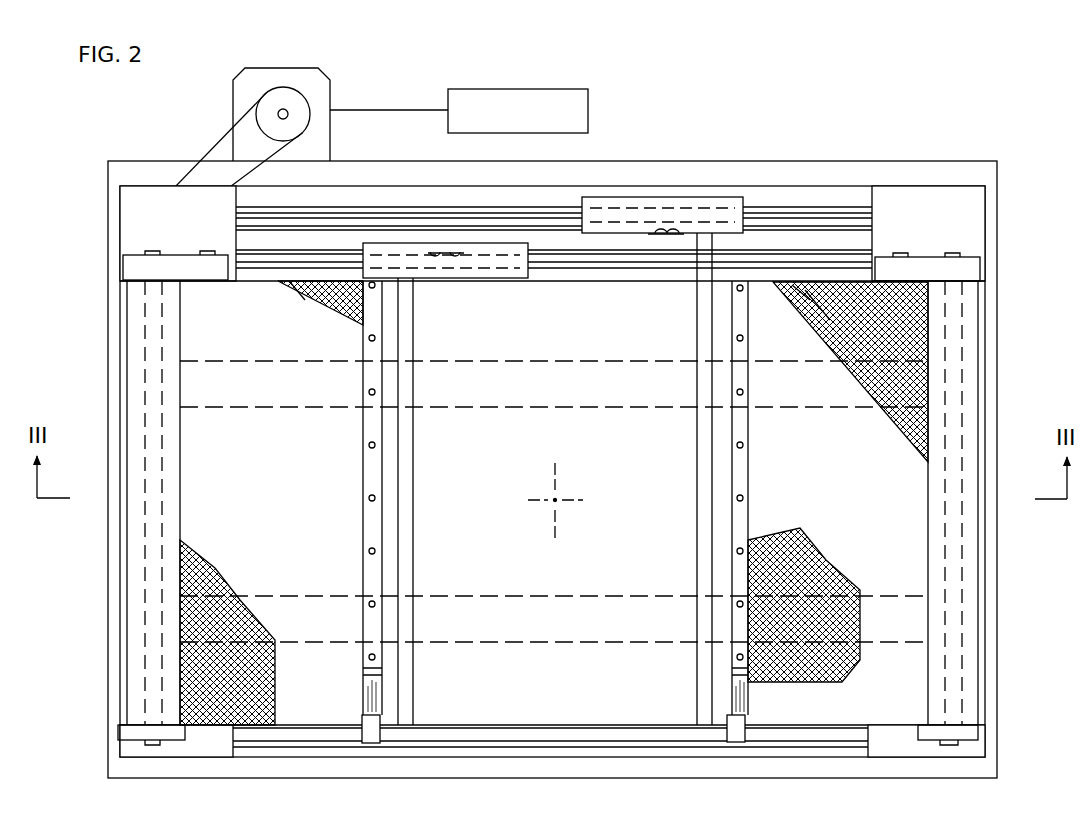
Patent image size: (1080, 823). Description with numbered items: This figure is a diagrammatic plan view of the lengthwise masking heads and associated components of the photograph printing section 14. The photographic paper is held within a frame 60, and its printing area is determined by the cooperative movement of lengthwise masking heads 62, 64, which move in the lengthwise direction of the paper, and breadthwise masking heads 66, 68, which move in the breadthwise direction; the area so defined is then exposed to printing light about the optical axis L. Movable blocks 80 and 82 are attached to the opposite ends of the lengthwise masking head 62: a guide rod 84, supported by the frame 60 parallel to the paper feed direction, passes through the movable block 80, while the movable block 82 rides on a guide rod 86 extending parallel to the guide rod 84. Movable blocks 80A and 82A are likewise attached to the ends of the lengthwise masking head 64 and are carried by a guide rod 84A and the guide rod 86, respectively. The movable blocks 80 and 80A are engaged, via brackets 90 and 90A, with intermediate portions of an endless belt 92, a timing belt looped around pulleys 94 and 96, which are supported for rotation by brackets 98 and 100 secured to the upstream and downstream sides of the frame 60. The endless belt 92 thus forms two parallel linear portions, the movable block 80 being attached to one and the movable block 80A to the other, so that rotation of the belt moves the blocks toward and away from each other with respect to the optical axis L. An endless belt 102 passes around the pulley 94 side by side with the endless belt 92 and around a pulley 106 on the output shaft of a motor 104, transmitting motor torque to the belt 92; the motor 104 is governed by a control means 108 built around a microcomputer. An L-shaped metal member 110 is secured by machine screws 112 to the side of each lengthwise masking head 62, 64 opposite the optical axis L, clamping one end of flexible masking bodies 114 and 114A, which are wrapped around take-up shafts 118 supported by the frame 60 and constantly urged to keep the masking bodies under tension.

The photograph printing section 14 is at (846, 152).
The frame 60 is at (997, 205).
The lengthwise masking head 62 is at (406, 513).
The lengthwise masking head 64 is at (714, 502).
The breadthwise masking head 66 is at (529, 370).
The breadthwise masking head 68 is at (537, 607).
The movable block 80 is at (490, 278).
The movable block 80A is at (715, 197).
The movable block 82 is at (362, 691).
The movable block 82A is at (750, 688).
The guide rod 84 is at (566, 266).
The guide rod 84A is at (562, 207).
The guide rod 86 is at (529, 740).
The bracket 90 is at (448, 250).
The bracket 90A is at (664, 238).
The endless belt 92 is at (525, 227).
The pulley 94 is at (130, 237).
The pulley 96 is at (973, 241).
The bracket 98 is at (134, 177).
The bracket 100 is at (927, 184).
The endless belt 102 is at (217, 152).
The motor 104 is at (328, 125).
The pulley 106 is at (305, 108).
The control means 108 is at (534, 98).
The L-shaped metal member 110 is at (372, 531).
The machine screws 112 is at (366, 339).
The masking body 114 is at (368, 473).
The masking body 114A is at (736, 453).
The take-up shaft 118 is at (165, 433).
The optical axis L is at (558, 502).